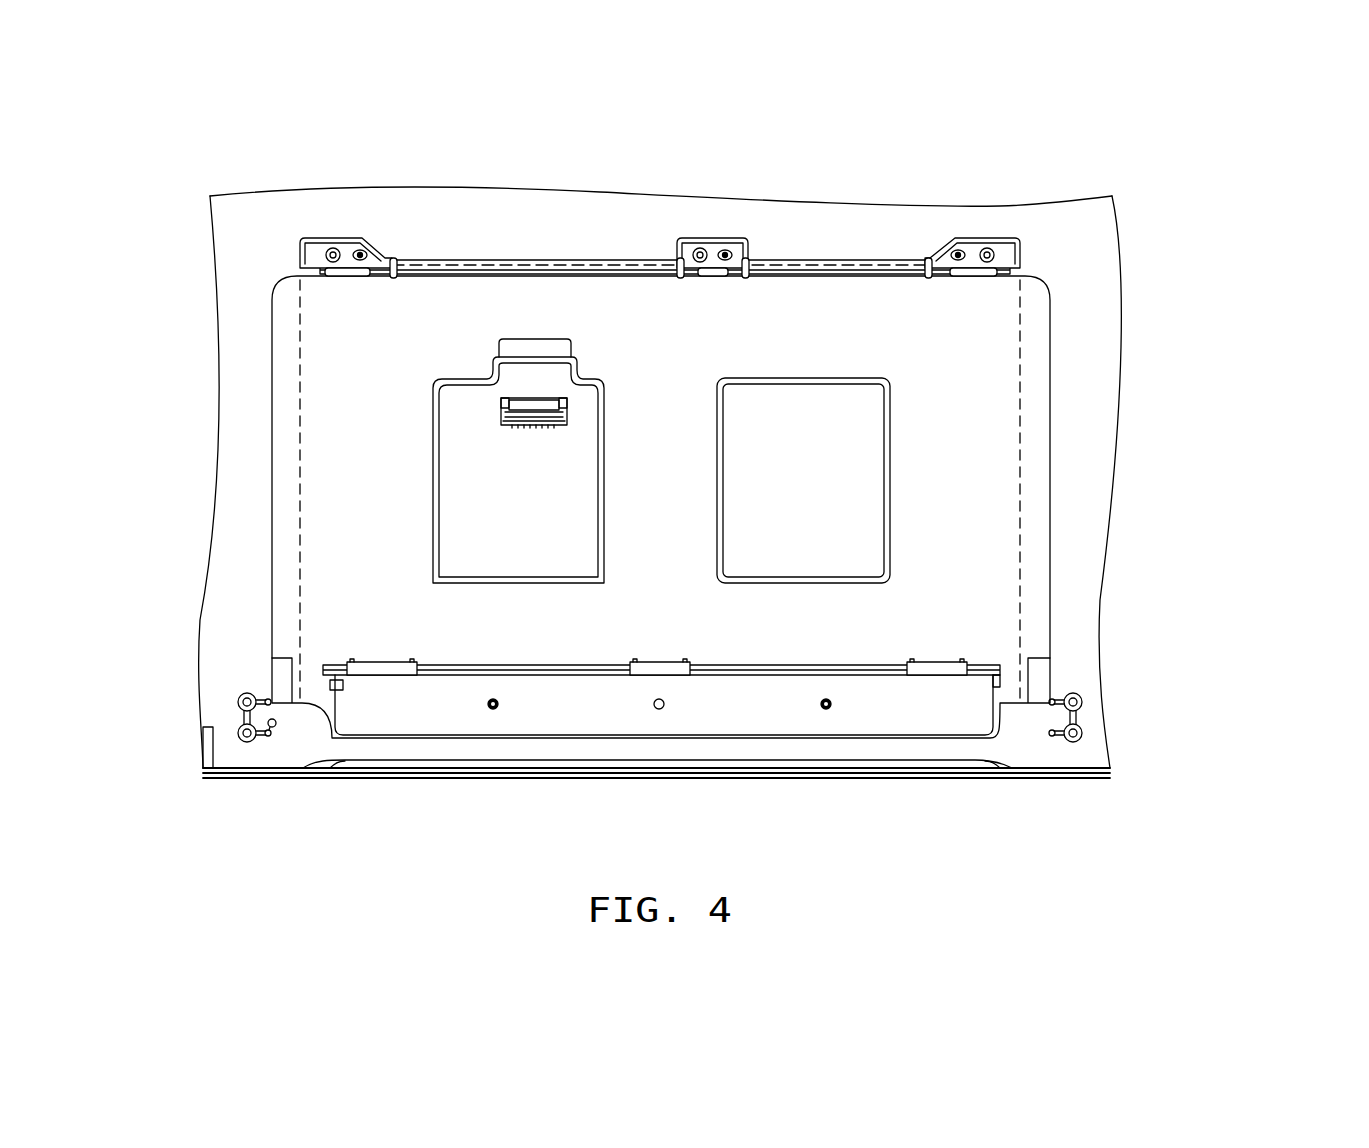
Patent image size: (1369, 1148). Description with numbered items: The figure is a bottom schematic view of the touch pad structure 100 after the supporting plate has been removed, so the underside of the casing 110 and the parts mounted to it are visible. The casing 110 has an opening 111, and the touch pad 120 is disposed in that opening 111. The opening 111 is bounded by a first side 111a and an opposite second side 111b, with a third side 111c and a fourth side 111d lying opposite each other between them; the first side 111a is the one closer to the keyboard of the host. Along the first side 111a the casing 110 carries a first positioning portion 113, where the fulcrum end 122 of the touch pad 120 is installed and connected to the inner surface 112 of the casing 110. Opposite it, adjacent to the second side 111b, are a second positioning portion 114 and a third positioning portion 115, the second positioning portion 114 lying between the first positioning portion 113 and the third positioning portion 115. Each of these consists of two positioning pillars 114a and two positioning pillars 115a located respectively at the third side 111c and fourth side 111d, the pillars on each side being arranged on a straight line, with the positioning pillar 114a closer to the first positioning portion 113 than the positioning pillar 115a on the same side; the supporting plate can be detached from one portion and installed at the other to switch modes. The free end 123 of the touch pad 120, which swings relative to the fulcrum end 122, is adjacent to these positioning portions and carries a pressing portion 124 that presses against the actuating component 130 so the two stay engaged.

The touch pad structure 100 is at (1359, 851).
The casing 110 is at (290, 205).
The opening 111 is at (1020, 383).
The first side 111a is at (583, 243).
The second side 111b is at (411, 748).
The third side 111c is at (290, 452).
The fourth side 111d is at (1028, 453).
The inner surface 112 is at (1091, 268).
The first positioning portion 113 is at (714, 238).
The second positioning portion 114 is at (660, 673).
The positioning pillars 114a is at (247, 695).
The third positioning portion 115 is at (660, 767).
The positioning pillars 115a is at (250, 742).
The touch pad 120 is at (828, 303).
The fulcrum end 122 is at (690, 238).
The free end 123 is at (845, 655).
The pressing portion 124 is at (940, 680).
The actuating component 130 is at (602, 725).